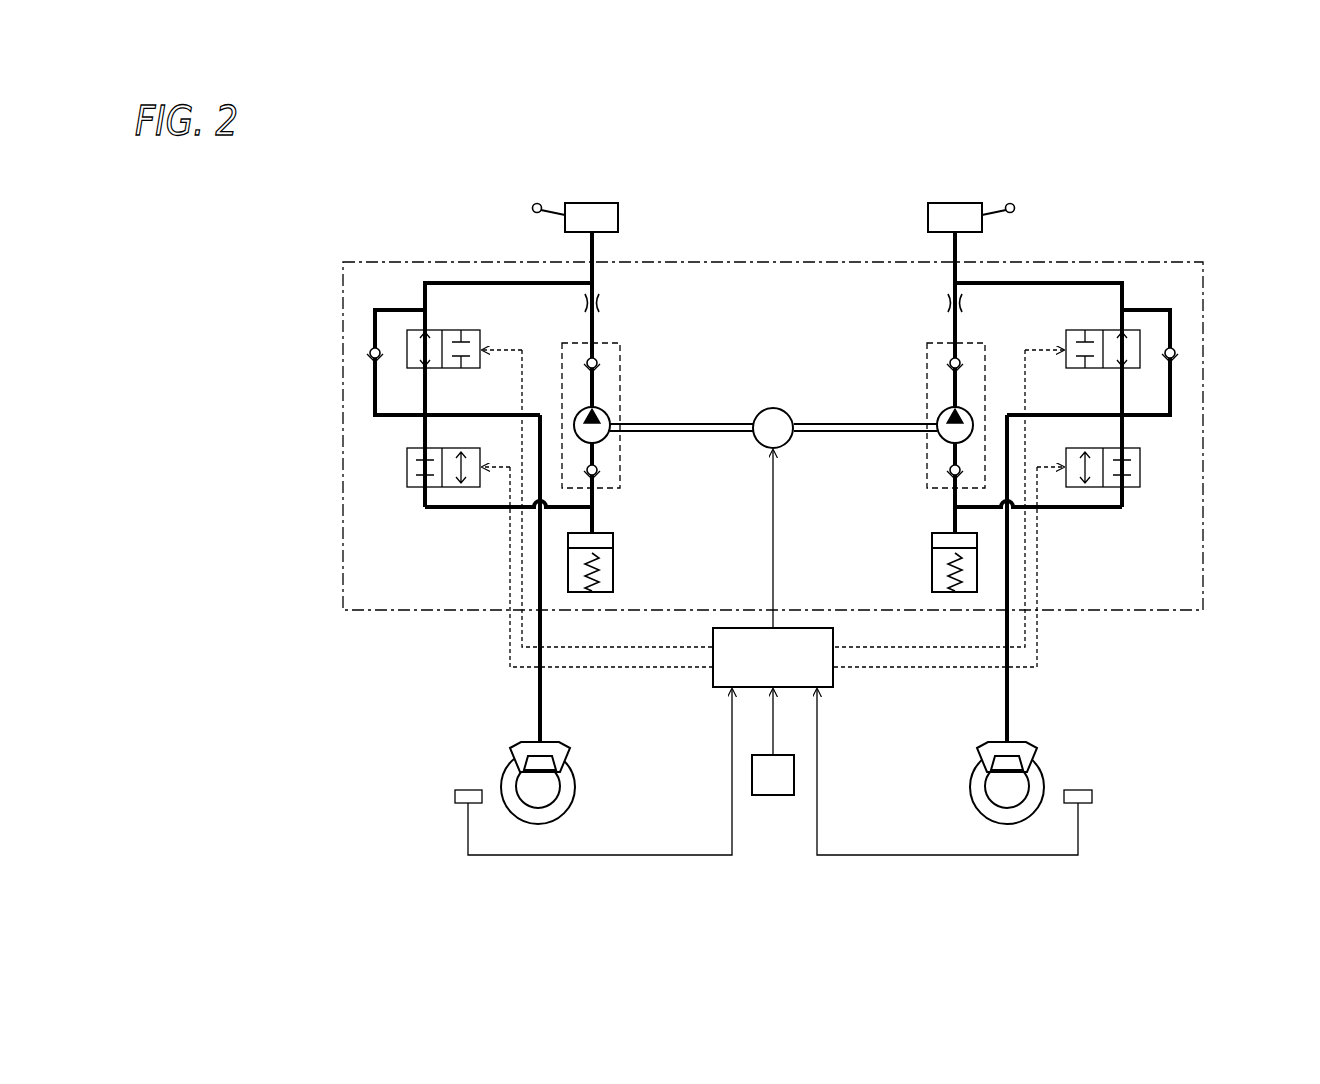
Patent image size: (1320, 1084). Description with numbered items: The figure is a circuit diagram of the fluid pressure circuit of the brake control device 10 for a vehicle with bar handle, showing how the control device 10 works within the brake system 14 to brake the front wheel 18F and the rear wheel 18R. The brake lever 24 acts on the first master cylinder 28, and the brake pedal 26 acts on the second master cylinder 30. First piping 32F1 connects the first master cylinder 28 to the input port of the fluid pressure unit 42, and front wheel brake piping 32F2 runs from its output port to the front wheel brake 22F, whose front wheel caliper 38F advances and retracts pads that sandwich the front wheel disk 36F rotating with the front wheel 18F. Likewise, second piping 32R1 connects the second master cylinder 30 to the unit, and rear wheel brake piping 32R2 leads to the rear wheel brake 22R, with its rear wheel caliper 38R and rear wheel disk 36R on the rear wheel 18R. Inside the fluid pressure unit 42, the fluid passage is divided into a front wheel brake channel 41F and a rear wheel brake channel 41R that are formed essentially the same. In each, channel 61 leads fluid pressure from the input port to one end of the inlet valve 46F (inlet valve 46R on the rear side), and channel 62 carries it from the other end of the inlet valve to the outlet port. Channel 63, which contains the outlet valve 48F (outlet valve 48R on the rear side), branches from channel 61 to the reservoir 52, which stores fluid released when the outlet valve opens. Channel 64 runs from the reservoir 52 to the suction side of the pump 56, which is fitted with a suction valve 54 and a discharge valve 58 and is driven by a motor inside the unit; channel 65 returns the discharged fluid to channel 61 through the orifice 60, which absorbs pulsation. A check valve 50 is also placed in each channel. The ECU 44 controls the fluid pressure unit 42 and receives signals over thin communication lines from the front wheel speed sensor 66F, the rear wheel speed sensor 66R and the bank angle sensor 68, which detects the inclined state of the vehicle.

The brake control device 10 is at (463, 652).
The brake system 14 is at (774, 189).
The rear wheel 18R is at (577, 790).
The front wheel 18F is at (970, 790).
The rear wheel brake 22R is at (555, 811).
The front wheel brake 22F is at (998, 811).
The brake lever 24 is at (992, 205).
The brake pedal 26 is at (552, 202).
The first master cylinder 28 is at (960, 203).
The second master cylinder 30 is at (588, 203).
The second piping 32R1 is at (595, 250).
The rear wheel brake piping 32R2 is at (545, 708).
The first piping 32F1 is at (952, 250).
The front wheel brake piping 32F2 is at (1004, 705).
The rear wheel disk 36R is at (556, 803).
The front wheel disk 36F is at (990, 803).
The rear wheel caliper 38R is at (520, 745).
The front wheel caliper 38F is at (1033, 745).
The rear wheel brake channel 41R is at (402, 295).
The front wheel brake channel 41F is at (1130, 295).
The fluid pressure unit 42 is at (1205, 421).
The ECU 44 is at (836, 689).
The inlet valve 46R is at (467, 330).
The inlet valve 46F is at (1080, 330).
The outlet valve 48R is at (406, 466).
The outlet valve 48F is at (1141, 466).
The check valve 50 is at (370, 348).
The reservoir 52 is at (615, 545).
The suction valve 54 is at (598, 473).
The pump 56 is at (606, 408).
The discharge valve 58 is at (598, 364).
The orifice 60 is at (605, 303).
The channel 61 is at (492, 282).
The channel 62 is at (538, 590).
The channel 63 is at (455, 510).
The channel 64 is at (596, 500).
The channel 65 is at (596, 340).
The rear wheel speed sensor 66R is at (454, 796).
The front wheel speed sensor 66F is at (1094, 796).
The bank angle sensor 68 is at (773, 796).